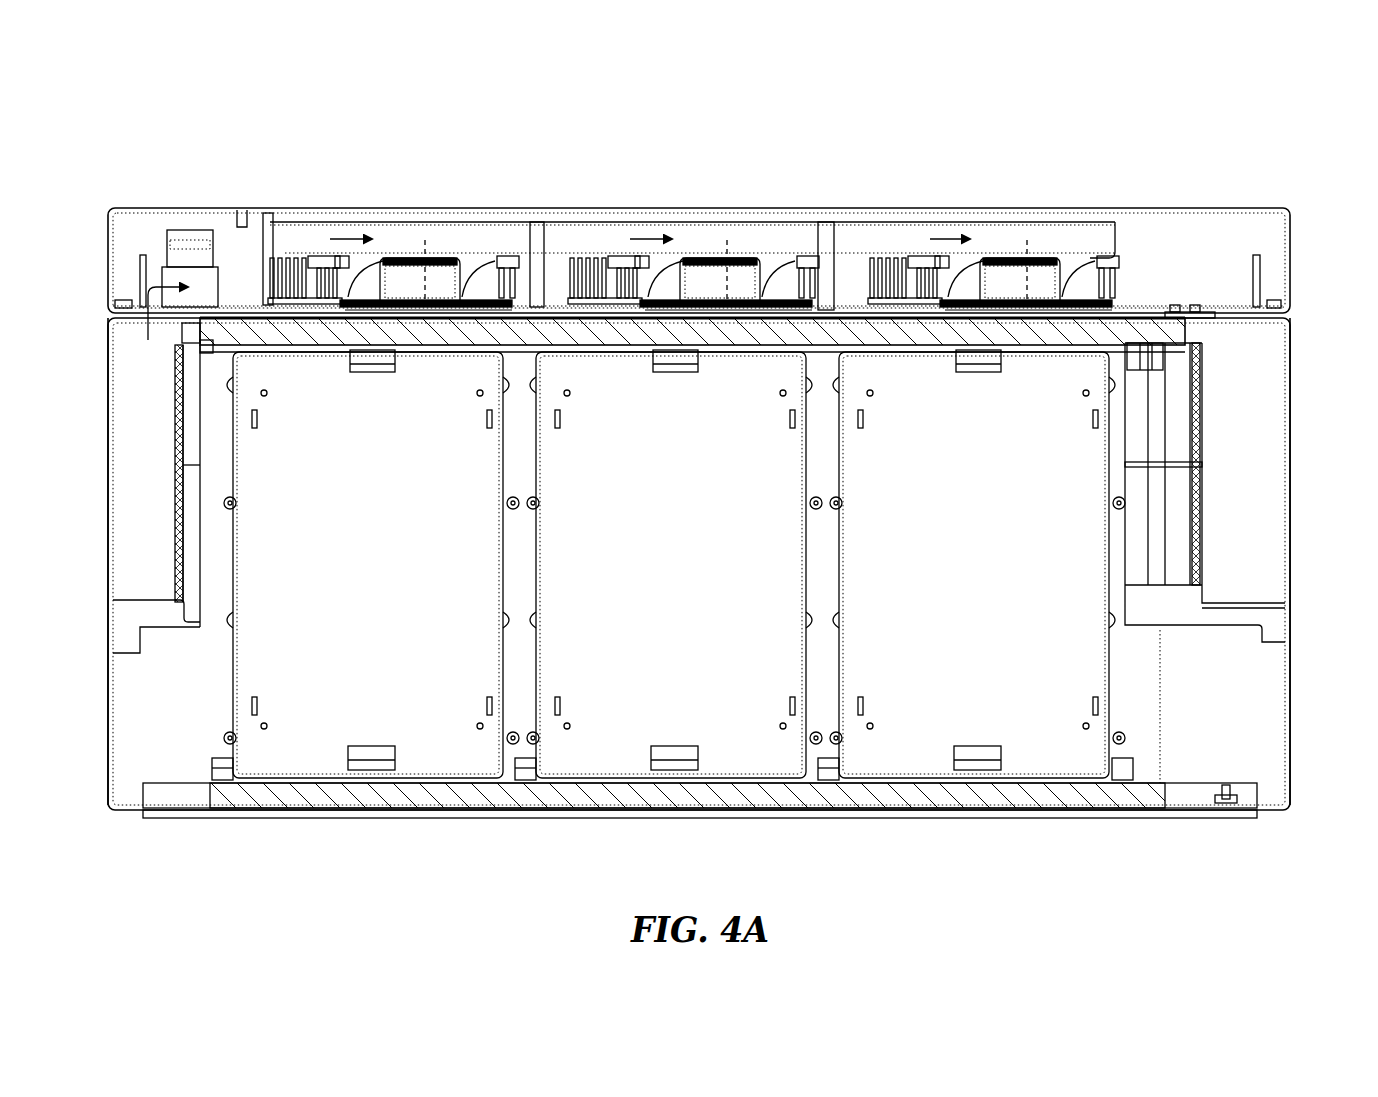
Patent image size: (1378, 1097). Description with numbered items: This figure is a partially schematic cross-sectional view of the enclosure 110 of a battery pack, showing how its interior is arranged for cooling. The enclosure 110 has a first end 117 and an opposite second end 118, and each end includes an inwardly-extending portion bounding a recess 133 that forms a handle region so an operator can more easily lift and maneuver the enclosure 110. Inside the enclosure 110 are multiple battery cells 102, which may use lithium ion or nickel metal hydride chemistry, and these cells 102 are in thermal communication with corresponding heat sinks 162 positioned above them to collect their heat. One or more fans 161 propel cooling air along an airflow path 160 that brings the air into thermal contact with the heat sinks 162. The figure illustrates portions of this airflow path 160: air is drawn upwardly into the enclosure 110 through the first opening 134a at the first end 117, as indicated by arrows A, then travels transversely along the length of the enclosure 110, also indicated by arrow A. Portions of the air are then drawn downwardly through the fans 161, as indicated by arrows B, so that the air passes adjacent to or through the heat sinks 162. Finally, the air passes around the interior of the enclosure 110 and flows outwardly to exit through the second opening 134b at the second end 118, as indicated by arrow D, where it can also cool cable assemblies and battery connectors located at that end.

The enclosure 110 is at (1246, 118).
The first end 117 is at (105, 762).
The second end 118 is at (1291, 726).
The airflow path 160 is at (256, 196).
The fans 161 is at (405, 270).
The heat sinks 162 is at (305, 266).
The recess 133 is at (126, 524).
The first opening 134a is at (124, 325).
The second opening 134b is at (1268, 325).
The battery cells 102 is at (283, 740).
The arrows A is at (341, 216).
The arrows B is at (433, 268).
The arrow D is at (1232, 360).